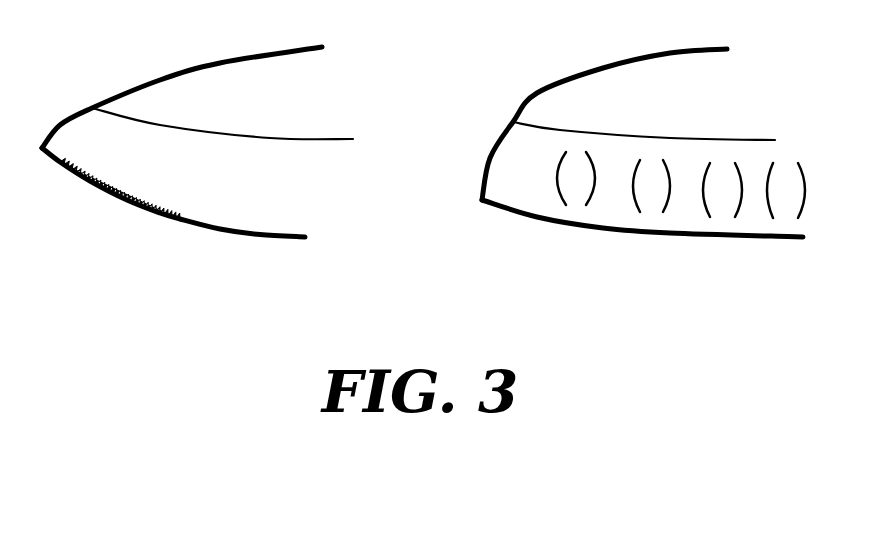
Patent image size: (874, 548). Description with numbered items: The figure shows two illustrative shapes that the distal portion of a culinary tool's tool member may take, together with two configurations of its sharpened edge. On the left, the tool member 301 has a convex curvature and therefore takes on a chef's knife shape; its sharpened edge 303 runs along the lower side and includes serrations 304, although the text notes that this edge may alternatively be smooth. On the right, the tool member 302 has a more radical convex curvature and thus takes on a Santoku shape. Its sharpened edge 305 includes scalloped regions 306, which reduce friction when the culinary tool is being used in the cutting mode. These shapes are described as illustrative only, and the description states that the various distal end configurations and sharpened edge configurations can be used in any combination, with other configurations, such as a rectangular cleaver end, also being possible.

The tool member 301 is at (197, 171).
The tool member 302 is at (643, 175).
The sharpened edge 303 is at (232, 230).
The serrations 304 is at (127, 198).
The sharpened edge 305 is at (733, 238).
The scalloped regions 306 is at (670, 165).